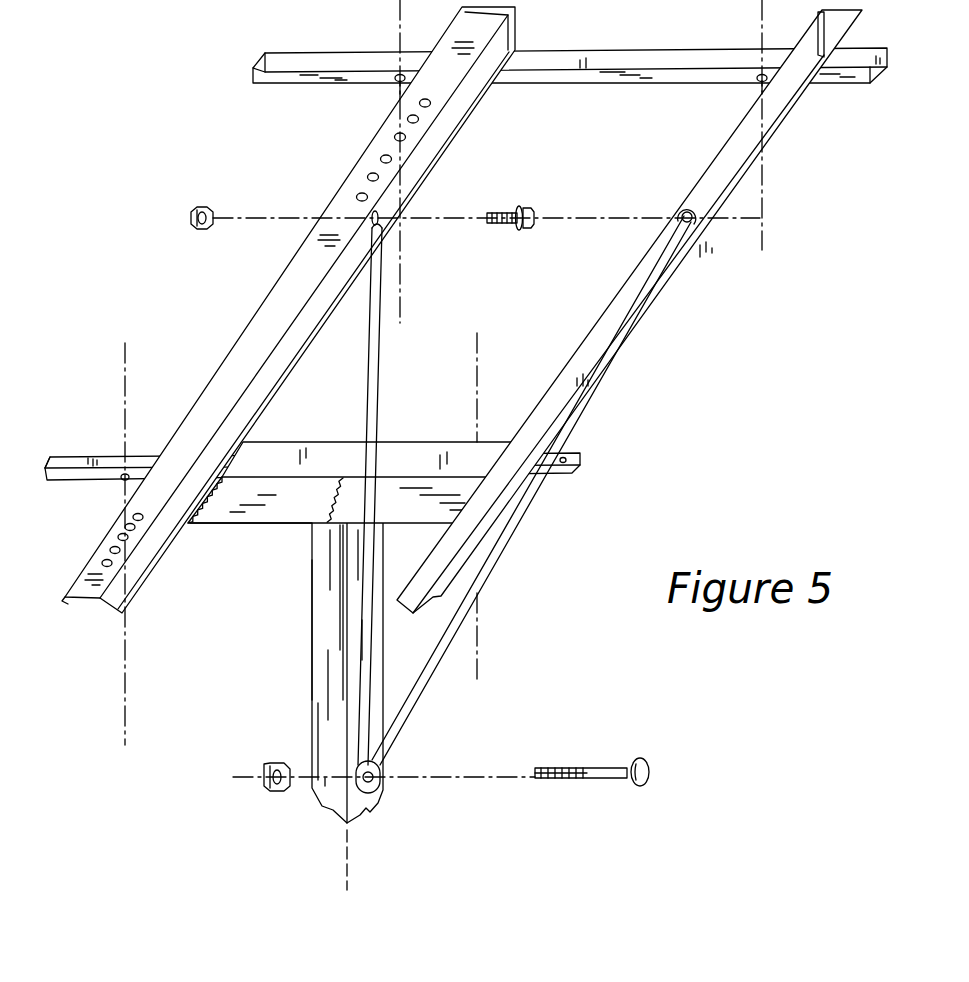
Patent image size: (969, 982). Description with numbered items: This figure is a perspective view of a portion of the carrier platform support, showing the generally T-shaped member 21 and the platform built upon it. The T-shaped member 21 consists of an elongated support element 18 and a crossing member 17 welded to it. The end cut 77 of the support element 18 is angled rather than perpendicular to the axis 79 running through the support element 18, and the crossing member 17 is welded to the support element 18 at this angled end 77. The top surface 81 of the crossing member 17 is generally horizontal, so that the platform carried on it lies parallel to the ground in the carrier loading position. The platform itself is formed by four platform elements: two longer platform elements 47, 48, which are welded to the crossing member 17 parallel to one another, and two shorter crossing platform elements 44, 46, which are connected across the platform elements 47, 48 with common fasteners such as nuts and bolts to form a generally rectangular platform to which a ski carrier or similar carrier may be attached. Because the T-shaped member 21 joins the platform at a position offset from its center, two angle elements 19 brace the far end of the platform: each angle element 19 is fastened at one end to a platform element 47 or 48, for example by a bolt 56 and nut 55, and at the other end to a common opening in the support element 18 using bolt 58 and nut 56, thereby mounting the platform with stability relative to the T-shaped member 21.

The crossing member 17 is at (228, 523).
The support element 18 is at (310, 665).
The angle element 19 is at (380, 370).
The T-shaped member 21 is at (275, 568).
The crossing platform element 44 is at (78, 455).
The crossing platform element 46 is at (330, 60).
The platform element 47 is at (710, 165).
The platform element 48 is at (255, 313).
The nut 55 is at (205, 205).
The bolt 56 is at (505, 212).
The bolt 58 is at (585, 768).
The angled end 77 is at (333, 500).
The axis 79 is at (350, 885).
The top surface 81 is at (410, 440).